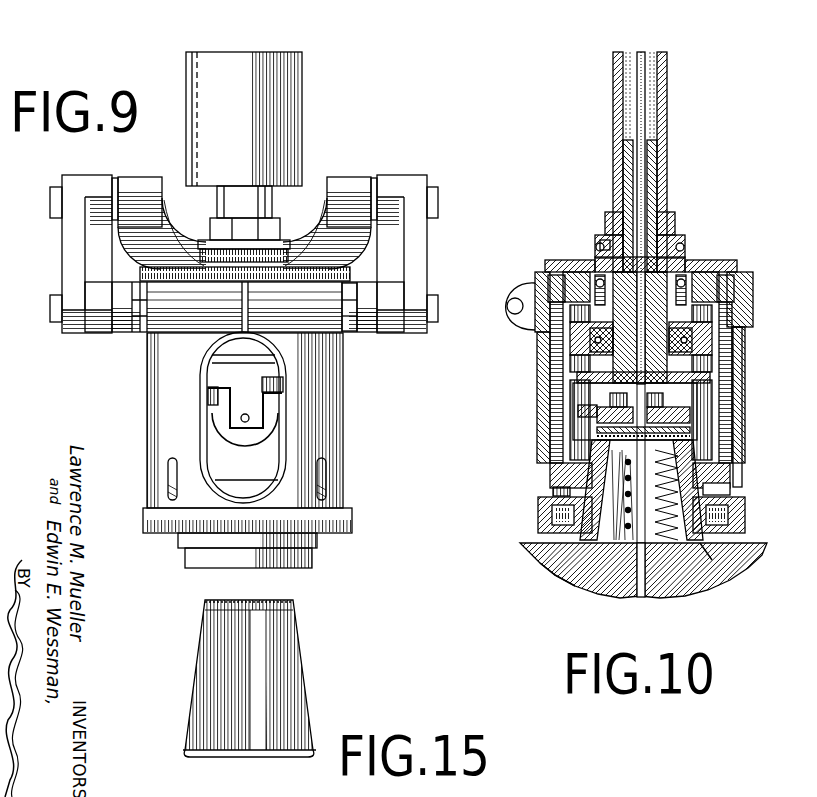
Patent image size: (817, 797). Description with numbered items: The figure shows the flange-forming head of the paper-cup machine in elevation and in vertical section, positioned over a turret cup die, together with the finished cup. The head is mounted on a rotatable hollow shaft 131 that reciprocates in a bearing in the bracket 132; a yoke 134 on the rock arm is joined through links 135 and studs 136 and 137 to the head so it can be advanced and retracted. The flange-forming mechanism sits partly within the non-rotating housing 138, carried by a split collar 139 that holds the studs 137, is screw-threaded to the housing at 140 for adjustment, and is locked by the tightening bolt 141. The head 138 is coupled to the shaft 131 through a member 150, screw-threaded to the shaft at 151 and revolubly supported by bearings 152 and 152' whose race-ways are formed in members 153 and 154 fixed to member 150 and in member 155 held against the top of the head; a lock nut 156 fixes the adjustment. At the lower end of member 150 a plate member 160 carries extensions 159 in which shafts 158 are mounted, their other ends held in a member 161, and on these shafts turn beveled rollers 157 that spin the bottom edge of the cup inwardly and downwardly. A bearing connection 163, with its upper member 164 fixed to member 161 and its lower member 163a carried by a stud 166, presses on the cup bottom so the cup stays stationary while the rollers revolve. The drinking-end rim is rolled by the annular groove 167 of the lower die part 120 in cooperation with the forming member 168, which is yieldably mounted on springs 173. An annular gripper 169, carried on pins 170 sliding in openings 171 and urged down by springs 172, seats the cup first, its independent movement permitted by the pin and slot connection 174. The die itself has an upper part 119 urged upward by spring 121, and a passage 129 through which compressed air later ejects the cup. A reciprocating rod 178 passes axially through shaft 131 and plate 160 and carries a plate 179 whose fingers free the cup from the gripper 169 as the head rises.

In FIG. 10, the upper part of cup die 119 is at (553, 492).
In FIG. 10, the lower part of cup die 120 is at (556, 556).
In FIG. 10, the spring 121 is at (661, 556).
In FIG. 10, the bore or passage 129 is at (587, 592).
In FIG. 9, the rotatable shaft 131 is at (235, 195).
In FIG. 10, the rotatable shaft 131 is at (618, 88).
In FIG. 9, the bracket 132 is at (244, 119).
In FIG. 9, the yoke 134 is at (308, 220).
In FIG. 9, the links 135 is at (415, 253).
In FIG. 9, the stud 136 is at (432, 200).
In FIG. 9, the stud 137 is at (57, 313).
In FIG. 9, the housing 138 is at (335, 388).
In FIG. 10, the housing 138 is at (740, 334).
In FIG. 9, the split collar 139 is at (155, 335).
In FIG. 10, the split collar 139 is at (752, 293).
In FIG. 10, the screw-threaded engagement 140 is at (540, 284).
In FIG. 9, the tightening bolt 141 is at (358, 318).
In FIG. 10, the member 150 is at (690, 262).
In FIG. 10, the screw-threaded engagement 151 is at (662, 160).
In FIG. 10, the bearing 152 is at (711, 217).
In FIG. 10, the bearing 152' is at (592, 227).
In FIG. 10, the member 153 is at (600, 236).
In FIG. 10, the member 154 is at (718, 262).
In FIG. 10, the member 155 is at (560, 262).
In FIG. 9, the lock nut 156 is at (268, 222).
In FIG. 10, the lock nut 156 is at (670, 223).
In FIG. 9, the beveled rollers or wheels 157 is at (223, 410).
In FIG. 10, the beveled rollers or wheels 157 is at (707, 432).
In FIG. 9, the shaft 158 is at (243, 419).
In FIG. 9, the extension 159 is at (250, 404).
In FIG. 10, the extension 159 is at (580, 410).
In FIG. 9, the plate member 160 is at (282, 382).
In FIG. 10, the plate member 160 is at (575, 383).
In FIG. 10, the member 161 is at (575, 397).
In FIG. 10, the bearing connection 163 is at (700, 458).
In FIG. 10, the lower bearing member 163a is at (578, 462).
In FIG. 10, the upper bearing member 164 is at (582, 452).
In FIG. 10, the stud 166 is at (712, 402).
In FIG. 10, the annular groove 167 is at (703, 550).
In FIG. 9, the forming member 168 is at (318, 545).
In FIG. 10, the forming member 168 is at (707, 540).
In FIG. 9, the annular gripper and positioning member 169 is at (313, 565).
In FIG. 10, the annular gripper and positioning member 169 is at (578, 538).
In FIG. 10, the pins 170 is at (600, 478).
In FIG. 10, the openings 171 is at (548, 268).
In FIG. 10, the springs 172 is at (551, 353).
In FIG. 10, the springs 173 is at (715, 490).
In FIG. 9, the pin and slot connection 174 is at (325, 474).
In FIG. 10, the reciprocating rod 178 is at (642, 112).
In FIG. 10, the plate 179 is at (722, 367).